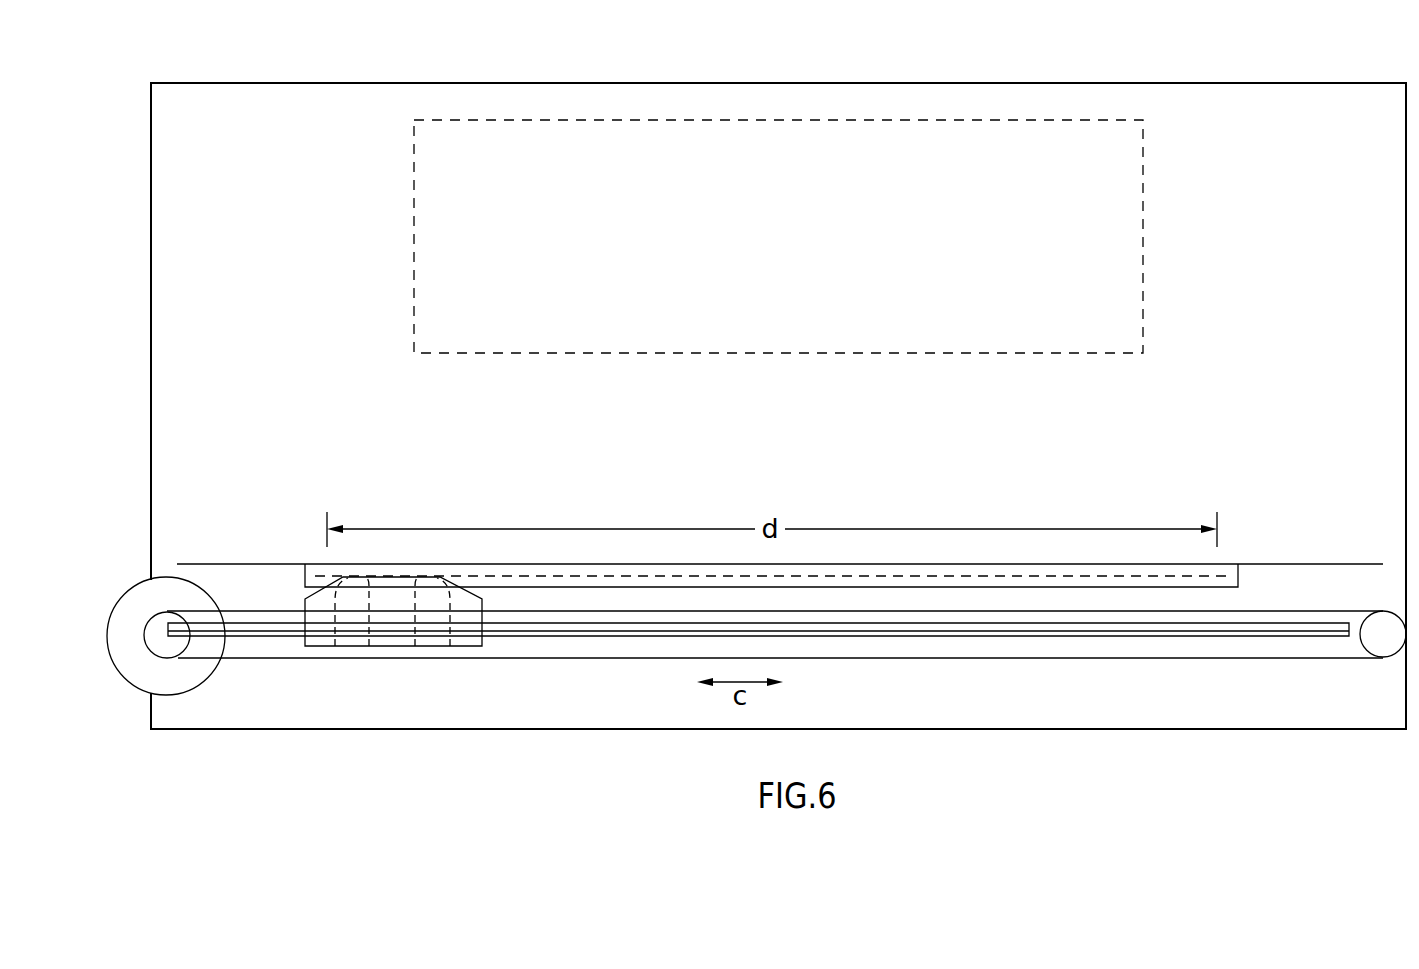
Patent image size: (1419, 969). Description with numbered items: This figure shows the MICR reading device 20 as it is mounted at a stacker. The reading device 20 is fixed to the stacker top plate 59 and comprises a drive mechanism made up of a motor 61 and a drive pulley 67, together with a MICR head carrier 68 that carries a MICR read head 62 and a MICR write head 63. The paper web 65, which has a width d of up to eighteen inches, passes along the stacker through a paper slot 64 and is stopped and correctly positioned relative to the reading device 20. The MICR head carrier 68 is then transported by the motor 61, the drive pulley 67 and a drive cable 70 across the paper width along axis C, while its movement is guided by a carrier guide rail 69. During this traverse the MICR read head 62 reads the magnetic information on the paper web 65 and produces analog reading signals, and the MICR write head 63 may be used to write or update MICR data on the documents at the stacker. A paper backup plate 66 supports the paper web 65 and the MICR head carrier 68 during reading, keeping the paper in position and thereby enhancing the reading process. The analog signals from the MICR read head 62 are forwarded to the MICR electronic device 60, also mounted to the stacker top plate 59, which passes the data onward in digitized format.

The MICR reading device 20 is at (753, 56).
The stacker top plate 59 is at (1060, 83).
The MICR electronic device 60 is at (757, 245).
The motor 61 is at (155, 577).
The MICR read head 62 is at (350, 577).
The MICR write head 63 is at (433, 577).
The paper slot 64 is at (945, 563).
The paper web 65 is at (1050, 576).
The paper backup plate 66 is at (1287, 563).
The drive pulley 67 is at (150, 657).
The MICR head carrier 68 is at (407, 597).
The carrier guide rail 69 is at (988, 636).
The drive cable 70 is at (1228, 657).